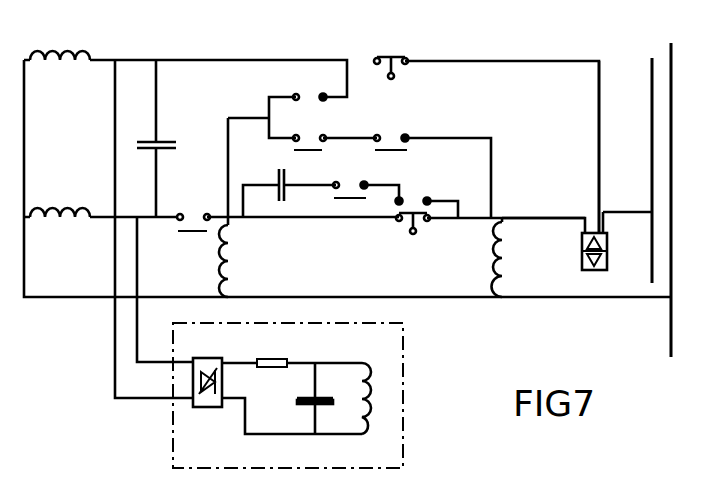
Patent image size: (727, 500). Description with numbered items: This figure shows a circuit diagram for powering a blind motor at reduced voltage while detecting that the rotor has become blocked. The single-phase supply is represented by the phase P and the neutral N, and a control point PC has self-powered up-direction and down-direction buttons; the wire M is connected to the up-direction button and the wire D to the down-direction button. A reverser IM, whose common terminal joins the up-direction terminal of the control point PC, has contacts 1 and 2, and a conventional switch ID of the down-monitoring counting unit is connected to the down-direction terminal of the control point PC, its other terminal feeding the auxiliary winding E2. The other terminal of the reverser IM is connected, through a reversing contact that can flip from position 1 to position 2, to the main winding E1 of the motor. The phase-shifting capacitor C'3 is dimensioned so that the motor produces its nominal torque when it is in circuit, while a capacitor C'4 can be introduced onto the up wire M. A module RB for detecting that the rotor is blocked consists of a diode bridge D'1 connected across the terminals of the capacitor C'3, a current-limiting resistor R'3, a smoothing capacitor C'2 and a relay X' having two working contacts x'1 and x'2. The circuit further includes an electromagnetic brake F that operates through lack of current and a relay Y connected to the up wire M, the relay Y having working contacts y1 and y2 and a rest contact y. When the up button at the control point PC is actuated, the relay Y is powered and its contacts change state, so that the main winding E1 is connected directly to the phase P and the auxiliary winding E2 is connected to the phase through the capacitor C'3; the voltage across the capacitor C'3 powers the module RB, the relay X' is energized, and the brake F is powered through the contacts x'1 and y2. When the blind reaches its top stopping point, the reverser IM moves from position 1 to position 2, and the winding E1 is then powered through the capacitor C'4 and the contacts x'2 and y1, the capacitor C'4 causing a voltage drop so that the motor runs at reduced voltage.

The auxiliary winding E2 is at (60, 44).
The main winding E1 is at (60, 200).
The phase-shifting capacitor C'3 is at (167, 138).
The working contact y1 is at (193, 236).
The electromagnetic brake F is at (239, 261).
The capacitor C'4 is at (260, 182).
The rest contact y is at (318, 70).
The working contact y2 is at (309, 129).
The working contact x'1 is at (390, 129).
The working contact x'2 is at (350, 177).
The contact 1 is at (423, 227).
The contact 2 is at (433, 190).
The reverser IM is at (402, 234).
The switch ID is at (391, 55).
The relay Y is at (511, 259).
The wire M is at (543, 205).
The wire D is at (610, 147).
The phase P is at (642, 162).
The neutral N is at (680, 197).
The control point PC is at (608, 265).
The module for detecting that the rotor has become blocked RB is at (403, 414).
The diode bridge D'1 is at (207, 398).
The current-limiting resistor R'3 is at (292, 350).
The smoothing capacitor C'2 is at (292, 398).
The relay X' is at (378, 398).